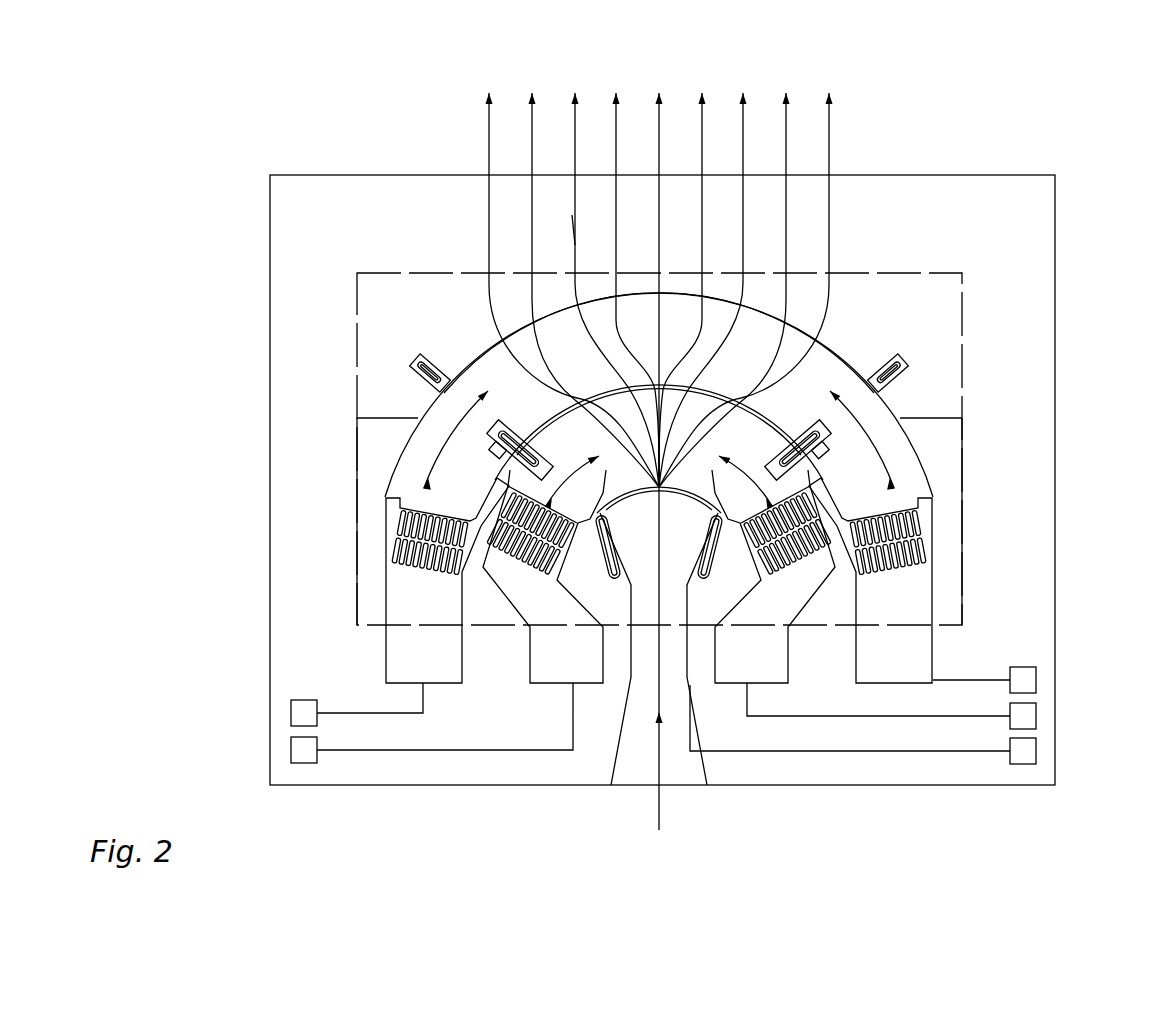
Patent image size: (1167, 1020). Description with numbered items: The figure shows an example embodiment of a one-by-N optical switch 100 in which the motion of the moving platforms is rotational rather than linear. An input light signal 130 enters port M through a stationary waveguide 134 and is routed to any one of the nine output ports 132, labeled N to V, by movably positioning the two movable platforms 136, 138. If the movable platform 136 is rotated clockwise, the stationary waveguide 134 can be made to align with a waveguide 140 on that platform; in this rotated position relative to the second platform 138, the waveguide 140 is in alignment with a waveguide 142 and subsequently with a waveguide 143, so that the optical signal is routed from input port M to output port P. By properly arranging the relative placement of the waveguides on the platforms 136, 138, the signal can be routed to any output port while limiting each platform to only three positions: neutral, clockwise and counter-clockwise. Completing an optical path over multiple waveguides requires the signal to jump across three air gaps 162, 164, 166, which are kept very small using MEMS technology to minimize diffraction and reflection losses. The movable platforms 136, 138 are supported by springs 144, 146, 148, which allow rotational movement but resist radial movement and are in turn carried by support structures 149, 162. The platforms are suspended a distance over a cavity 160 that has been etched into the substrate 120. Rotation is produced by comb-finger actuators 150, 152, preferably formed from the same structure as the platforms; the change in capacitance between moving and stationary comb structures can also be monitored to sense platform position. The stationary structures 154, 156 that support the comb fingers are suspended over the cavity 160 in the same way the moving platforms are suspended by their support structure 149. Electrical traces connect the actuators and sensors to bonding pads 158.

The 1×N optical switch 100 is at (200, 740).
The substrate 120 is at (270, 360).
The input light signal 130 is at (658, 807).
The output ports 132 is at (658, 263).
The waveguide 134 is at (663, 718).
The movable platform 136 is at (760, 417).
The movable platform 138 is at (833, 363).
The waveguide 140 is at (603, 440).
The waveguide 142 is at (577, 330).
The waveguide 143 is at (572, 230).
The spring 144 is at (713, 580).
The spring 146 is at (822, 457).
The spring 148 is at (907, 365).
The support structure 149 is at (650, 505).
The actuator 150 is at (800, 570).
The actuator 152 is at (910, 577).
The stationary structure 154 is at (385, 608).
The stationary structure 156 is at (503, 595).
The bonding pads 158 is at (291, 748).
The cavity 160 is at (357, 487).
The air gap 162 is at (937, 425).
The air gap 164 is at (640, 395).
The air gap 166 is at (668, 275).